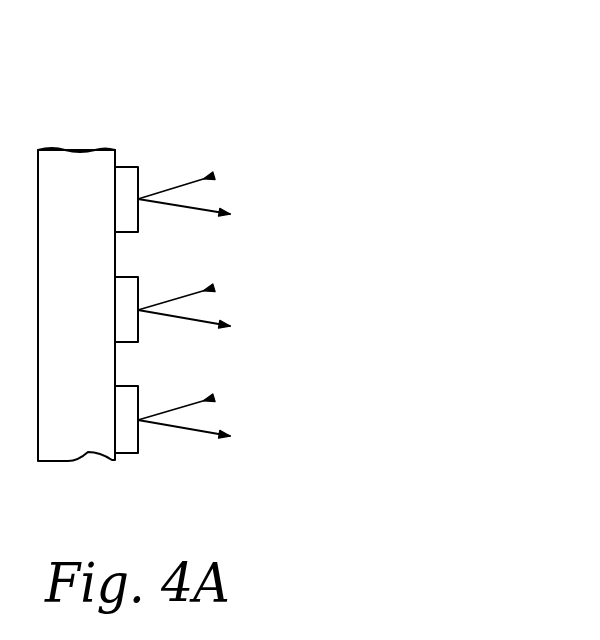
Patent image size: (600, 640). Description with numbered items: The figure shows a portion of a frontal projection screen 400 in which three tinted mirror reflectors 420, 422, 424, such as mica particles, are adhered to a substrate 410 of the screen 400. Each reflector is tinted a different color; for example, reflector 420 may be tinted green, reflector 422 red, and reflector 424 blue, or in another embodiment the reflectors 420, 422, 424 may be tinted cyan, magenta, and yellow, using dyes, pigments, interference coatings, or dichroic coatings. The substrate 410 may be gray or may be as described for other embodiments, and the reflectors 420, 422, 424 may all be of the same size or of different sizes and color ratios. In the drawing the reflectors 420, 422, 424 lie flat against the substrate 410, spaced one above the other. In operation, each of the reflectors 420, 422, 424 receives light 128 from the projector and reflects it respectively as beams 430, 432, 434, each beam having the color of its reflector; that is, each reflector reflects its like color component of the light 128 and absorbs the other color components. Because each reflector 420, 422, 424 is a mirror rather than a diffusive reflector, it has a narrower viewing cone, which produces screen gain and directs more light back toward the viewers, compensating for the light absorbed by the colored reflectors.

The frontal projection screen 400 is at (302, 76).
The substrate 410 is at (96, 258).
The tinted mirror reflector 420 is at (127, 172).
The tinted mirror reflector 422 is at (128, 326).
The tinted mirror reflector 424 is at (127, 445).
The light 128 is at (207, 181).
The beam 430 is at (207, 213).
The beam 432 is at (207, 325).
The beam 434 is at (207, 435).